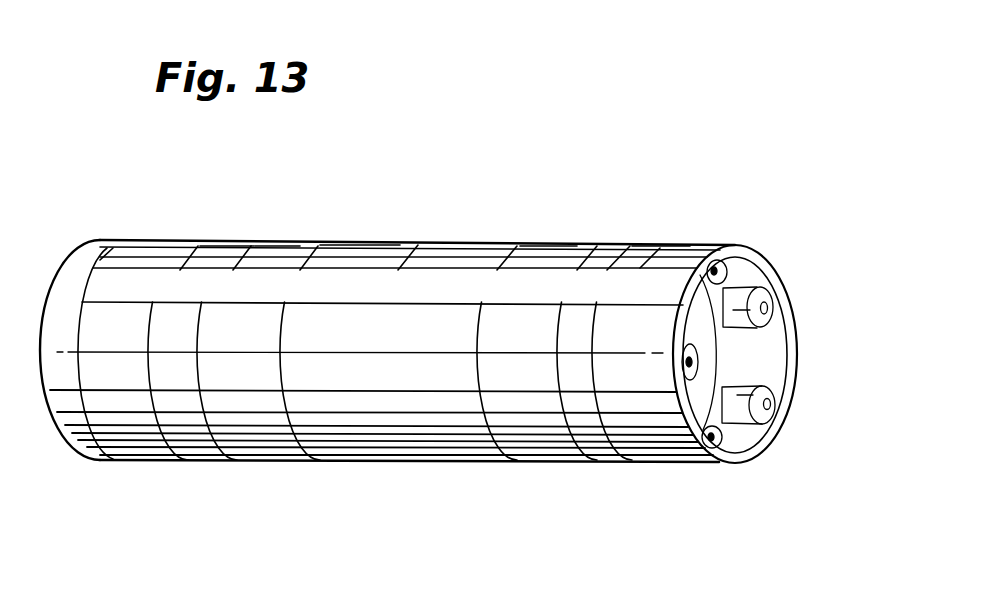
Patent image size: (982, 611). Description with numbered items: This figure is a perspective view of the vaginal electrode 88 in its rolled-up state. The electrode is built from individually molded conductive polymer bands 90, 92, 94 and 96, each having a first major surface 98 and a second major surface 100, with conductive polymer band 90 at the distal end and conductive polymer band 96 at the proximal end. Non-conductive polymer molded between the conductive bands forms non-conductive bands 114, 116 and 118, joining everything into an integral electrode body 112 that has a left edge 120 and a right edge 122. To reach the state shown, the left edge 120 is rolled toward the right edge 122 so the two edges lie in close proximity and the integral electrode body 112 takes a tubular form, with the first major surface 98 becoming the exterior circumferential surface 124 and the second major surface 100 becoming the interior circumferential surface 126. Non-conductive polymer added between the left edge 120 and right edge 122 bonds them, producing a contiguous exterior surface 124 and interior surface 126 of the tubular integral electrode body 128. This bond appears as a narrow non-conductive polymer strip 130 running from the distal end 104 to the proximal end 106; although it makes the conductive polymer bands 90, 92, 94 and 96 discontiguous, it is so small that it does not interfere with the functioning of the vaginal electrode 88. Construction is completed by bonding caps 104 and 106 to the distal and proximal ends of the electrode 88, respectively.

The vaginal electrode 88 is at (372, 479).
The conductive polymer band 90 is at (145, 240).
The conductive polymer band 92 is at (294, 243).
The conductive polymer band 94 is at (560, 243).
The conductive polymer band 96 is at (668, 243).
The first major surface 98 is at (545, 423).
The second major surface 100 is at (762, 355).
The distal end cap 104 is at (77, 258).
The proximal end cap 106 is at (770, 270).
The integral electrode body 112 is at (252, 335).
The non-conductive band 114 is at (200, 462).
The non-conductive band 116 is at (410, 465).
The non-conductive band 118 is at (618, 462).
The left edge 120 is at (403, 303).
The right edge 122 is at (418, 245).
The exterior circumferential surface 124 is at (469, 383).
The interior circumferential surface 126 is at (768, 377).
The tubular integral electrode body 128 is at (722, 250).
The narrow non-conductive polymer strip 130 is at (256, 282).